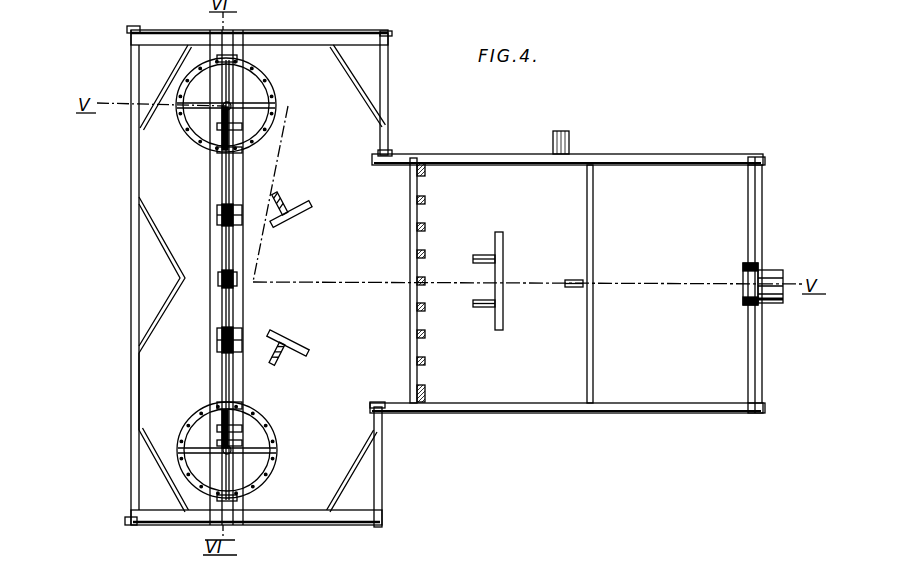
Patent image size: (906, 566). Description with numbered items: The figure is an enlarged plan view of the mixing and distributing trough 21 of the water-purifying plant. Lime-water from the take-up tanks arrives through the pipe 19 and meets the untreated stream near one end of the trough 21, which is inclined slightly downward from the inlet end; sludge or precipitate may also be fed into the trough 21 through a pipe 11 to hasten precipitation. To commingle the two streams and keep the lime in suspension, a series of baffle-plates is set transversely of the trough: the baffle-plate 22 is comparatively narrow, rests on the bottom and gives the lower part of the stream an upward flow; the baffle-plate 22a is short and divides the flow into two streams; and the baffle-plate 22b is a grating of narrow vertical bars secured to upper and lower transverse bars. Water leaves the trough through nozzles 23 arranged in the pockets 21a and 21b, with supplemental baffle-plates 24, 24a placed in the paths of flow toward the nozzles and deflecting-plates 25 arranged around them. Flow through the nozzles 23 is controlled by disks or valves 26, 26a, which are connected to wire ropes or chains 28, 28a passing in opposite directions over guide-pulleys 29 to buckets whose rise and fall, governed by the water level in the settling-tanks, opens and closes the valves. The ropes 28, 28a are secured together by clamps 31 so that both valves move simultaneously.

The vent pipe 11 is at (570, 137).
The pipe 19 is at (770, 268).
The mixing and distributing trough 21 is at (460, 150).
The pocket 21a is at (258, 276).
The pocket 21b is at (233, 416).
The baffle-plate 22 is at (588, 228).
The baffle-plate 22a is at (503, 262).
The baffle-plate 22b is at (410, 260).
The nozzle 23 is at (273, 88).
The supplemental baffle-plate 24 is at (285, 210).
The supplemental baffle-plate 24a is at (288, 343).
The deflecting-plate 25 is at (147, 105).
The disk or valve 26 is at (253, 118).
The disk or valve 26a is at (253, 432).
The wire rope or chain 28 is at (220, 173).
The wire rope or chain 28a is at (220, 383).
The guide-pulley 29 is at (220, 220).
The clamp 31 is at (233, 278).